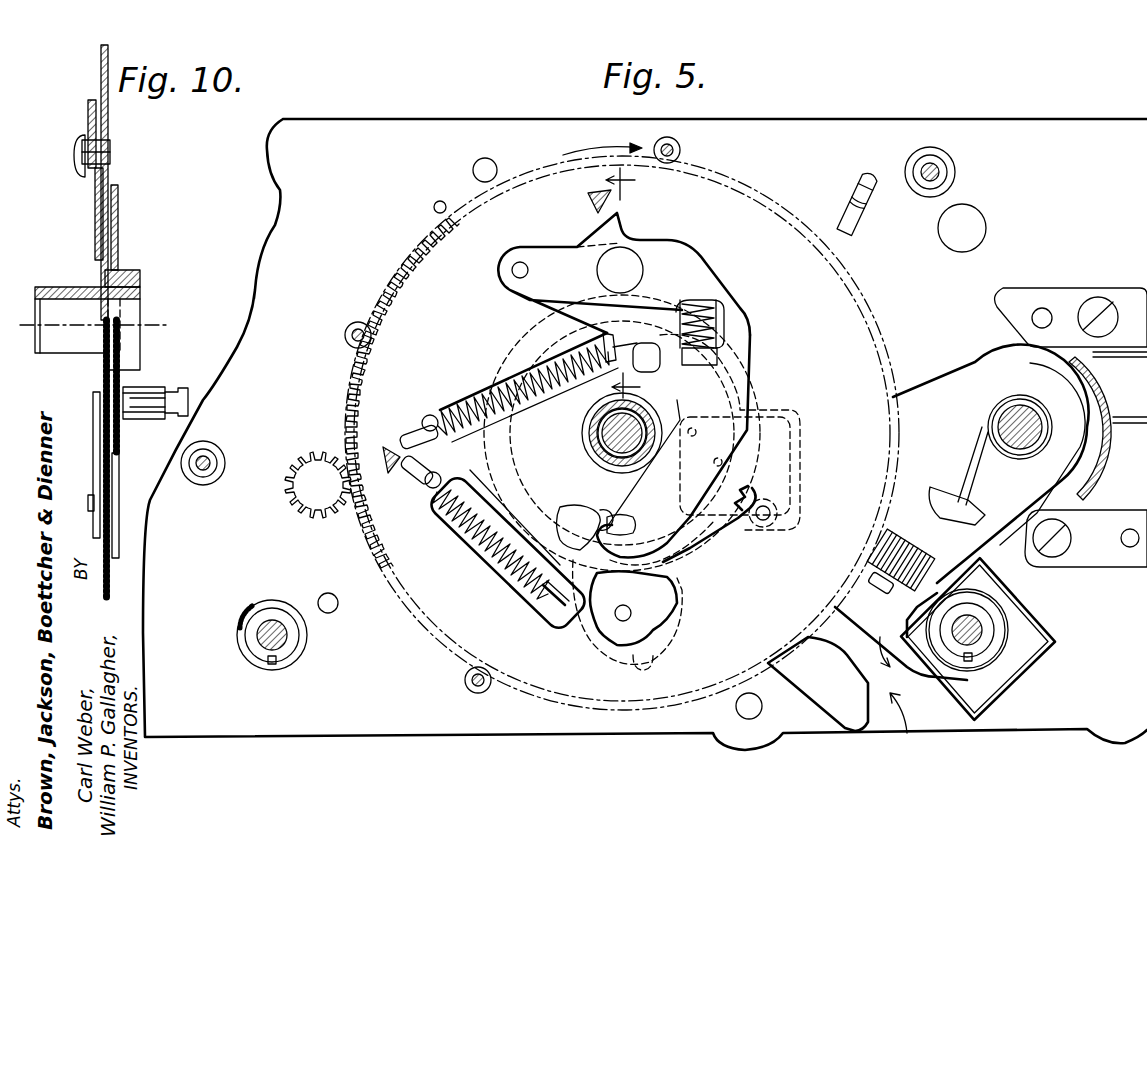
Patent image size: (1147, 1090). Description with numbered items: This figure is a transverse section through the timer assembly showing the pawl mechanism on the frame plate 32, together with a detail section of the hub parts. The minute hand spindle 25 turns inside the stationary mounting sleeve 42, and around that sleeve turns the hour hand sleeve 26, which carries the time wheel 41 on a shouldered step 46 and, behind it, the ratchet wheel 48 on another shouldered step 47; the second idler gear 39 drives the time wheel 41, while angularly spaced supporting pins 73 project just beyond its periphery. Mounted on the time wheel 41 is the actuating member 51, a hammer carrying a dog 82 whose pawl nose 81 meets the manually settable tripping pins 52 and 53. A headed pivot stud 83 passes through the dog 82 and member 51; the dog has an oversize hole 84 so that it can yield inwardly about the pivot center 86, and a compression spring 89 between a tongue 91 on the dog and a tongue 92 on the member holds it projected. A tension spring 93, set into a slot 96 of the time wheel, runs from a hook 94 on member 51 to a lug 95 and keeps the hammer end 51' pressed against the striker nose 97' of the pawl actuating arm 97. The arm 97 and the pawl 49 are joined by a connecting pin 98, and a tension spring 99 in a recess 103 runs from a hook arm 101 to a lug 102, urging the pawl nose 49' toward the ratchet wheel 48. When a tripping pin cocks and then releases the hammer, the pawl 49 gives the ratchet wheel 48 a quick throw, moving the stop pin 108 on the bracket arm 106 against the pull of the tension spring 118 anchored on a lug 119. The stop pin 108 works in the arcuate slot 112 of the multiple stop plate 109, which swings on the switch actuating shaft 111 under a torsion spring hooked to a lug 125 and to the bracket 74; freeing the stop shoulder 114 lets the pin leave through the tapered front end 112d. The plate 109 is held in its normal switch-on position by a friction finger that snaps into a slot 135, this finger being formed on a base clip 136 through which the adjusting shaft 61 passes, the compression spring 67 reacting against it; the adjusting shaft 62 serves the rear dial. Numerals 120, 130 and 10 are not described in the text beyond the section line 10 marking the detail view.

In FIG. 10, the time wheel 41 is at (100, 77).
In FIG. 5, the time wheel 41 is at (420, 243).
In FIG. 10, the dog 82 is at (87, 112).
In FIG. 5, the dog 82 is at (668, 262).
In FIG. 10, the hole 84 is at (108, 145).
In FIG. 10, the pivot stud 83 is at (80, 158).
In FIG. 5, the pivot stud 83 is at (605, 273).
In FIG. 10, the actuating member 51 is at (62, 214).
In FIG. 5, the actuating member 51 is at (709, 445).
In FIG. 10, the ratchet wheel 48 is at (118, 203).
In FIG. 10, the shouldered step 47 is at (140, 272).
In FIG. 10, the shouldered step 46 is at (140, 276).
In FIG. 10, the hour hand sleeve 26 is at (50, 287).
In FIG. 5, the hour hand sleeve 26 is at (600, 455).
In FIG. 10, the stop pin 108 is at (145, 387).
In FIG. 5, the stop pin 108 is at (788, 530).
In FIG. 10, the tension spring 118 is at (172, 385).
In FIG. 10, the pawl actuating arm 97 is at (65, 465).
In FIG. 5, the pawl actuating arm 97 is at (578, 515).
In FIG. 10, the connecting pin 98 is at (88, 503).
In FIG. 5, the connecting pin 98 is at (700, 555).
In FIG. 10, the pawl 49 is at (134, 505).
In FIG. 5, the pawl 49 is at (640, 615).
In FIG. 5, the supporting pins 73 is at (680, 150).
In FIG. 5, the lug 119 is at (848, 185).
In FIG. 5, the tripping pin 53 is at (585, 197).
In FIG. 5, the pawl nose 81 is at (622, 222).
In FIG. 5, the tongue 91 is at (712, 300).
In FIG. 5, the compression spring 89 is at (726, 316).
In FIG. 5, the pivot center 86 is at (514, 277).
In FIG. 5, the tension spring 93 is at (490, 392).
In FIG. 5, the multiple stop plate 109 is at (895, 397).
In FIG. 5, the tongue 92 is at (718, 358).
In FIG. 5, the slot 96 is at (468, 397).
In FIG. 5, the switch actuating shaft 111 is at (998, 412).
In FIG. 5, the hook 94 is at (662, 360).
In FIG. 5, the minute hand spindle 25 is at (595, 418).
In FIG. 5, the bracket arm 106 is at (802, 446).
In FIG. 5, the rod 120 is at (972, 450).
In FIG. 5, the lug 95 is at (400, 430).
In FIG. 5, the second idler gear 39 is at (312, 470).
In FIG. 5, the striker nose 97' is at (613, 504).
In FIG. 5, the hammer end 51' is at (624, 502).
In FIG. 5, the mounting sleeve 42 is at (667, 457).
In FIG. 5, the lug 125 is at (940, 492).
In FIG. 5, the tripping pin 52 is at (391, 472).
In FIG. 5, the lug 102 is at (428, 490).
In FIG. 5, the bracket 74 is at (1086, 496).
In FIG. 5, the roller 130 is at (880, 545).
In FIG. 5, the recess 103 is at (458, 535).
In FIG. 5, the tension spring 99 is at (500, 538).
In FIG. 5, the base clip 136 is at (1020, 610).
In FIG. 5, the slot 135 is at (875, 590).
In FIG. 5, the pawl nose 49' is at (633, 608).
In FIG. 5, the stop shoulder 114 is at (888, 642).
In FIG. 5, the adjusting shaft 61 is at (985, 638).
In FIG. 5, the hook arm 101 is at (552, 603).
In FIG. 5, the adjusting shaft 62 is at (270, 638).
In FIG. 5, the compression spring 67 is at (268, 663).
In FIG. 5, the arcuate slot 112 is at (845, 657).
In FIG. 5, the frame plate 32 is at (352, 715).
In FIG. 5, the tapered front end 112d is at (911, 729).
In FIG. 5, the section line 10 is at (638, 283).